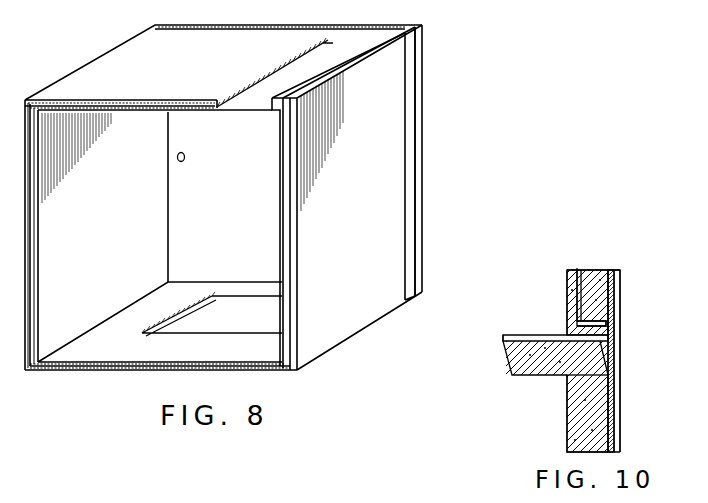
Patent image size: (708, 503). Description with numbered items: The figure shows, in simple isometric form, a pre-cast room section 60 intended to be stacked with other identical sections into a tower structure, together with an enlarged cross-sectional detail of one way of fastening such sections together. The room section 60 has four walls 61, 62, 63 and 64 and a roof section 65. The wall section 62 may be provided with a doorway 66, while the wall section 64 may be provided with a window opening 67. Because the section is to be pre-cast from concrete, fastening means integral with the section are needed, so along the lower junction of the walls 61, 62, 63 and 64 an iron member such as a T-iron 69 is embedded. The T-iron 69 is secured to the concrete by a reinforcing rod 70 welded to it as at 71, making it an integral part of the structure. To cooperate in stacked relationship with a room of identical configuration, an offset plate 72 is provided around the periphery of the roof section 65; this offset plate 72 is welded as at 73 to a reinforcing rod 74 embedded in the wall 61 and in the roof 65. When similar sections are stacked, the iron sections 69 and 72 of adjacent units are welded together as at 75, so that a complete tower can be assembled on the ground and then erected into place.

In FIG. 8, the room section 60 is at (368, 340).
In FIG. 8, the wall 61 is at (361, 219).
In FIG. 10, the wall 61 is at (575, 424).
In FIG. 8, the wall section 62 is at (187, 74).
In FIG. 8, the wall 63 is at (116, 241).
In FIG. 8, the wall section 64 is at (140, 358).
In FIG. 8, the roof section 65 is at (250, 199).
In FIG. 10, the roof section 65 is at (520, 363).
In FIG. 8, the doorway 66 is at (278, 68).
In FIG. 8, the window opening 67 is at (198, 307).
In FIG. 8, the T-iron 69 is at (288, 228).
In FIG. 10, the T-iron 69 is at (608, 335).
In FIG. 10, the reinforcing rod 70 is at (580, 287).
In FIG. 10, the weld 71 is at (606, 323).
In FIG. 8, the offset plate 72 is at (428, 86).
In FIG. 10, the offset plate 72 is at (616, 381).
In FIG. 10, the weld 73 is at (607, 368).
In FIG. 10, the reinforcing rod 74 is at (608, 411).
In FIG. 10, the weld 75 is at (620, 355).